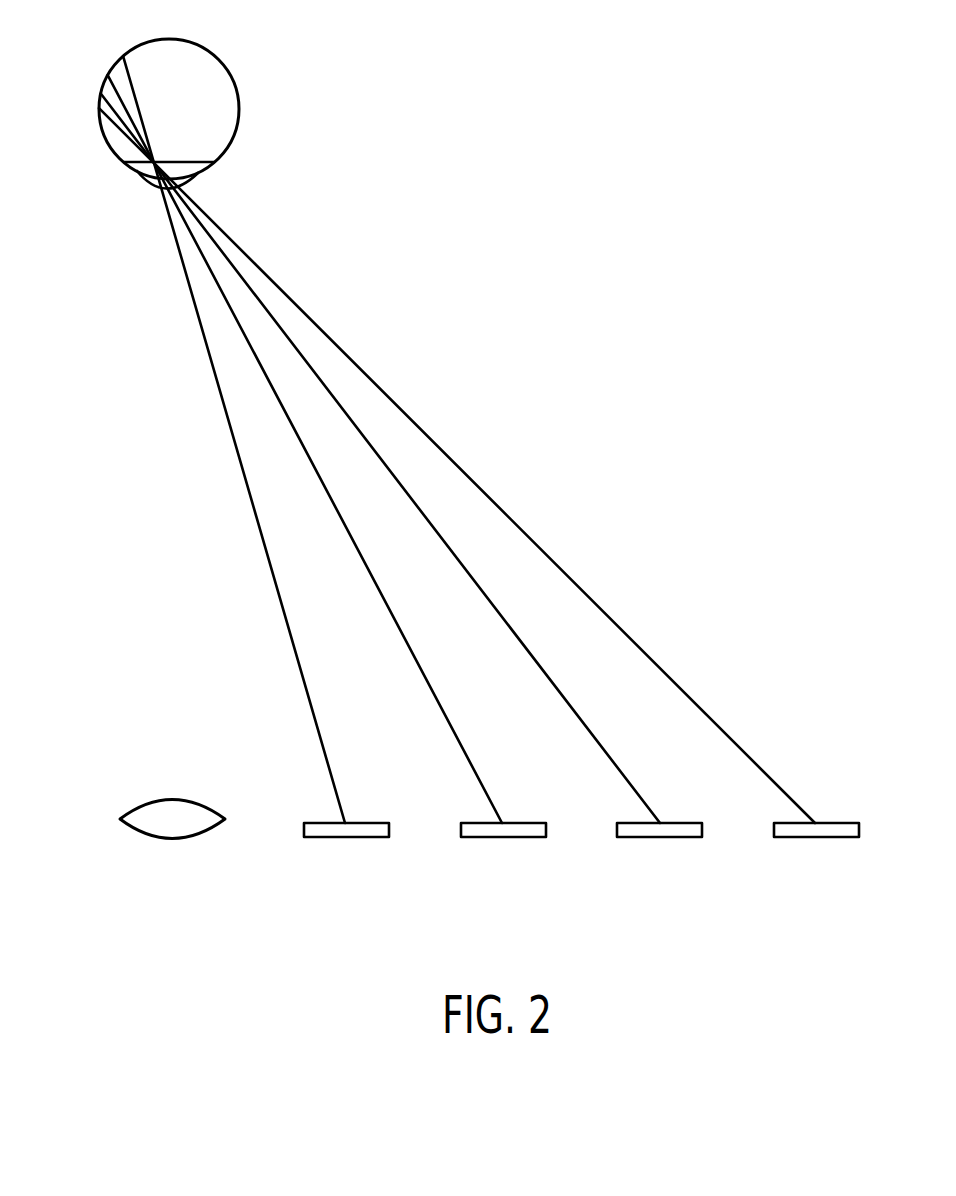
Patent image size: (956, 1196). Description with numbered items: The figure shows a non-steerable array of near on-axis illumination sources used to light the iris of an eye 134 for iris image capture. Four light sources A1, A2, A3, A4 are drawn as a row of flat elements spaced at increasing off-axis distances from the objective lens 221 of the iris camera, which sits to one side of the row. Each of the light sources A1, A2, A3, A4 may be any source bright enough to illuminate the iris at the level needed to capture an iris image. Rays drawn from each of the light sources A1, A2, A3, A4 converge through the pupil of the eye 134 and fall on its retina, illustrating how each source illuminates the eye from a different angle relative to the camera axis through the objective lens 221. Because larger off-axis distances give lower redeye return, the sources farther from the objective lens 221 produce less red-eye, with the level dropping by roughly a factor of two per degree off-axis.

The eye 134 is at (220, 60).
The objective lens 221 is at (130, 812).
The light source A1 is at (348, 838).
The light source A2 is at (505, 838).
The light source A3 is at (662, 838).
The light source A4 is at (818, 838).